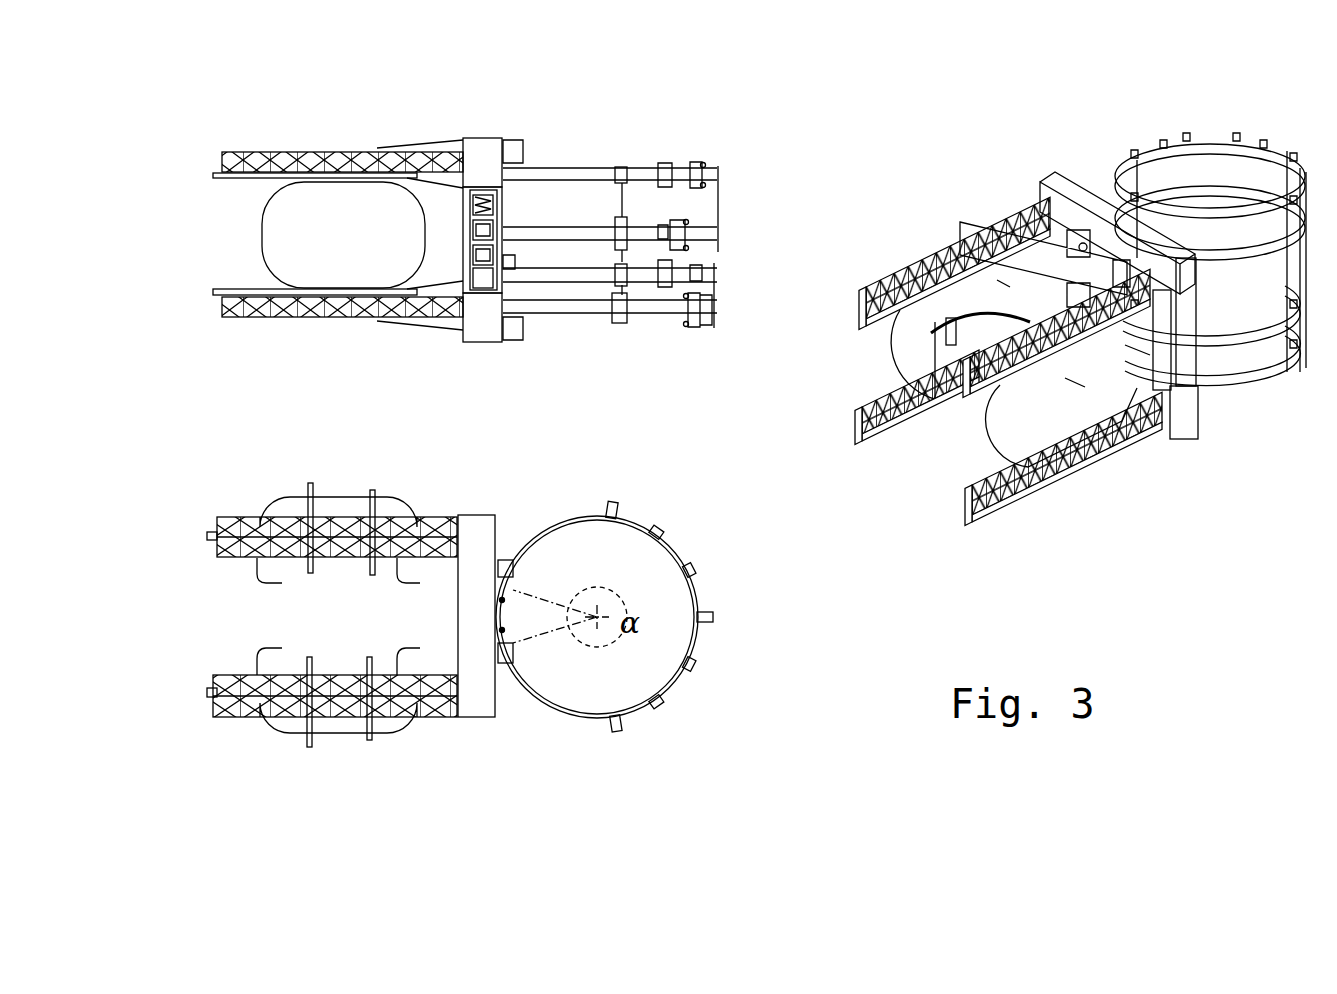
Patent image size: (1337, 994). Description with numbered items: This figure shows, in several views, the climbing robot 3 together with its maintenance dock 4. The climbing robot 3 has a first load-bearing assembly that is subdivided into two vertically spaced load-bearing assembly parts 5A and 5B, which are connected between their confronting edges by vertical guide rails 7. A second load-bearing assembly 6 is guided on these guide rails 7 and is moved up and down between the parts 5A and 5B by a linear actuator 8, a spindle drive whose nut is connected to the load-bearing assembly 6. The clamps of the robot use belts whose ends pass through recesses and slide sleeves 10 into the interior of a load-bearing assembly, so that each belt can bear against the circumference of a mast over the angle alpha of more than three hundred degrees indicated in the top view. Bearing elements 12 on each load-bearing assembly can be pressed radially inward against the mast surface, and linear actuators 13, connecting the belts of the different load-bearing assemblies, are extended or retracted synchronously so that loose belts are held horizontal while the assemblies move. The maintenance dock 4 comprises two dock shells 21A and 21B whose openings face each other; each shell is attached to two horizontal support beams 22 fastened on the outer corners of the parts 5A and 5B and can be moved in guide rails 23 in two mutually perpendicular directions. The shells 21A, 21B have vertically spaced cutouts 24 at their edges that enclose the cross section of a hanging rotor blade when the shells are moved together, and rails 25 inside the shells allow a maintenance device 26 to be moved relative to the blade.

The climbing robot 3 is at (540, 122).
The maintenance dock 4 is at (340, 122).
The load-bearing assembly part 5A is at (489, 159).
The load-bearing assembly part 5B is at (485, 324).
The second load-bearing assembly 6 is at (1175, 383).
The guide rails 7 is at (501, 208).
The linear actuator 8 is at (489, 200).
The slide sleeves 10 is at (504, 629).
The bearing elements 12 is at (524, 264).
The linear actuators 13 is at (619, 222).
The dock shell 21A is at (337, 729).
The dock shell 21B is at (345, 501).
The support beams 22 is at (248, 316).
The guide rails 23 is at (367, 568).
The cutouts 24 is at (396, 659).
The rails 25 is at (902, 276).
The maintenance device 26 is at (962, 340).